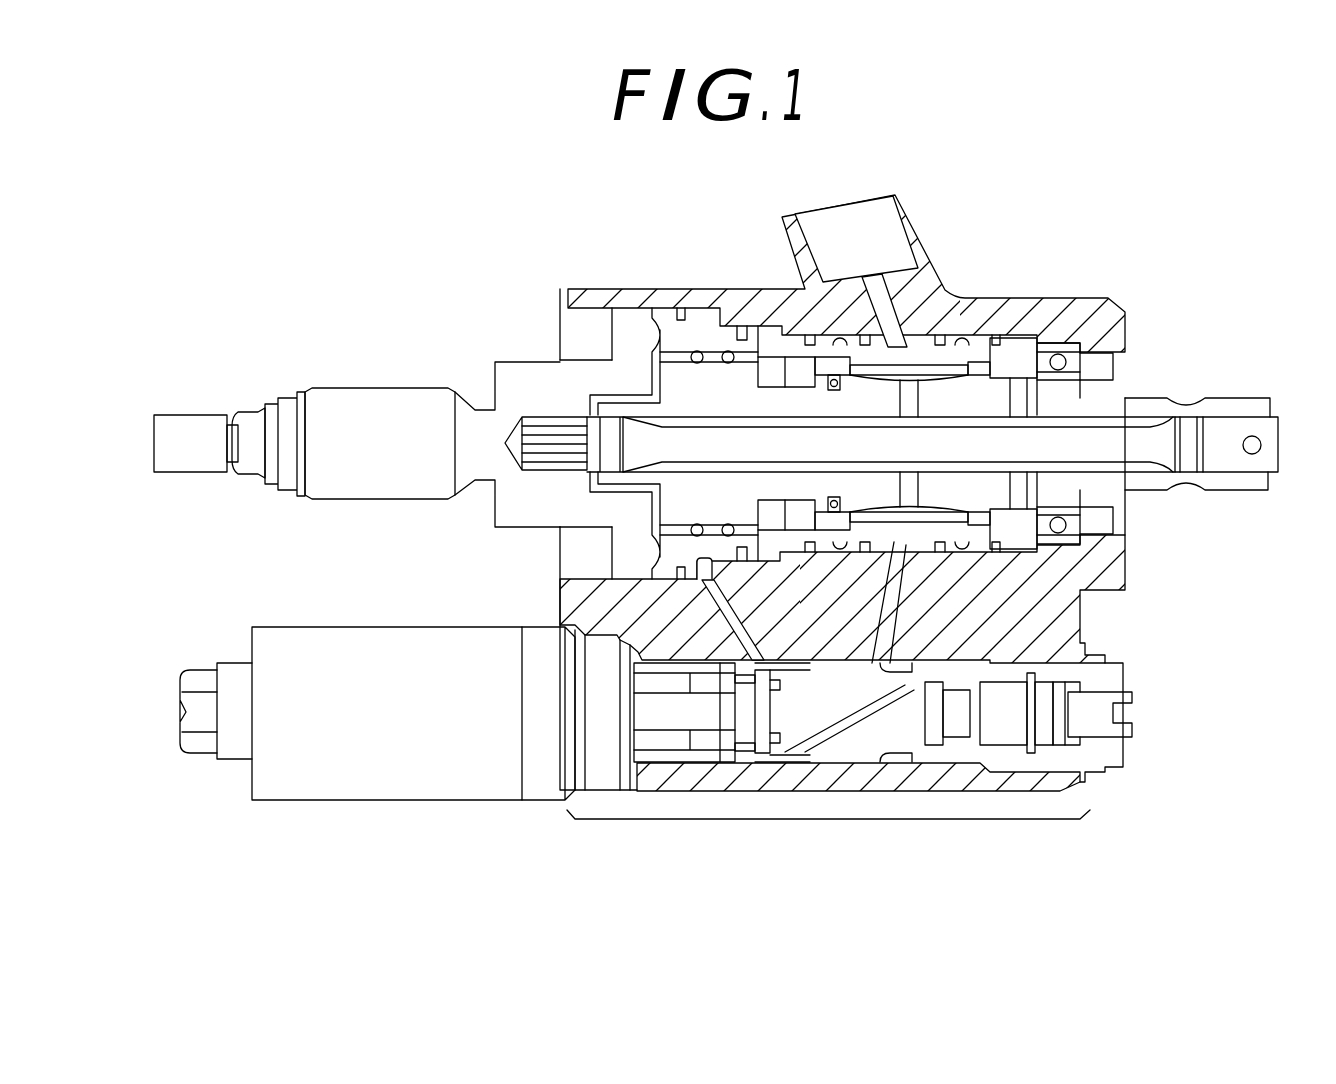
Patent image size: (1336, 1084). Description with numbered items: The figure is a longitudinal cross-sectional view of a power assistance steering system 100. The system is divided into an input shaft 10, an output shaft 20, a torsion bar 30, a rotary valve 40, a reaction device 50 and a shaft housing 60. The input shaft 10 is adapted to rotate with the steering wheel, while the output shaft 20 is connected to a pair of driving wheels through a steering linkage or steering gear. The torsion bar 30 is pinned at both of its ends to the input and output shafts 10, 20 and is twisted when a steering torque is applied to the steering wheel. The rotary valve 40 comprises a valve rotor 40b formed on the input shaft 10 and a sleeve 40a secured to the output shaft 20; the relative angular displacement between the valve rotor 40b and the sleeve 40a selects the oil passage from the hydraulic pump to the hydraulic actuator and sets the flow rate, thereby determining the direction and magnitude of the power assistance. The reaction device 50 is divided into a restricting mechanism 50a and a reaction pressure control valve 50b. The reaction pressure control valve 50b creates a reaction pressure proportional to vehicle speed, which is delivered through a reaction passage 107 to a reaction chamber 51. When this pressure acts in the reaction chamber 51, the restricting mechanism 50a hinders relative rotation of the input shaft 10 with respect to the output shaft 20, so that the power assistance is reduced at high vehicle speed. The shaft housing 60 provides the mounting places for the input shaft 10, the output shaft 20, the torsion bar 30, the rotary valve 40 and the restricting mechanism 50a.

The power assistance steering system 100 is at (984, 200).
The input shaft 10 is at (1252, 410).
The output shaft 20 is at (517, 383).
The torsion bar 30 is at (1125, 443).
The rotary valve 40 is at (1115, 190).
The sleeve 40a is at (920, 362).
The valve rotor 40b is at (967, 407).
The reaction device 50 is at (994, 862).
The restricting mechanism 50a is at (749, 484).
The reaction pressure control valve 50b is at (815, 823).
The reaction chamber 51 is at (707, 576).
The shaft housing 60 is at (1112, 315).
The reaction passage 107 is at (740, 628).